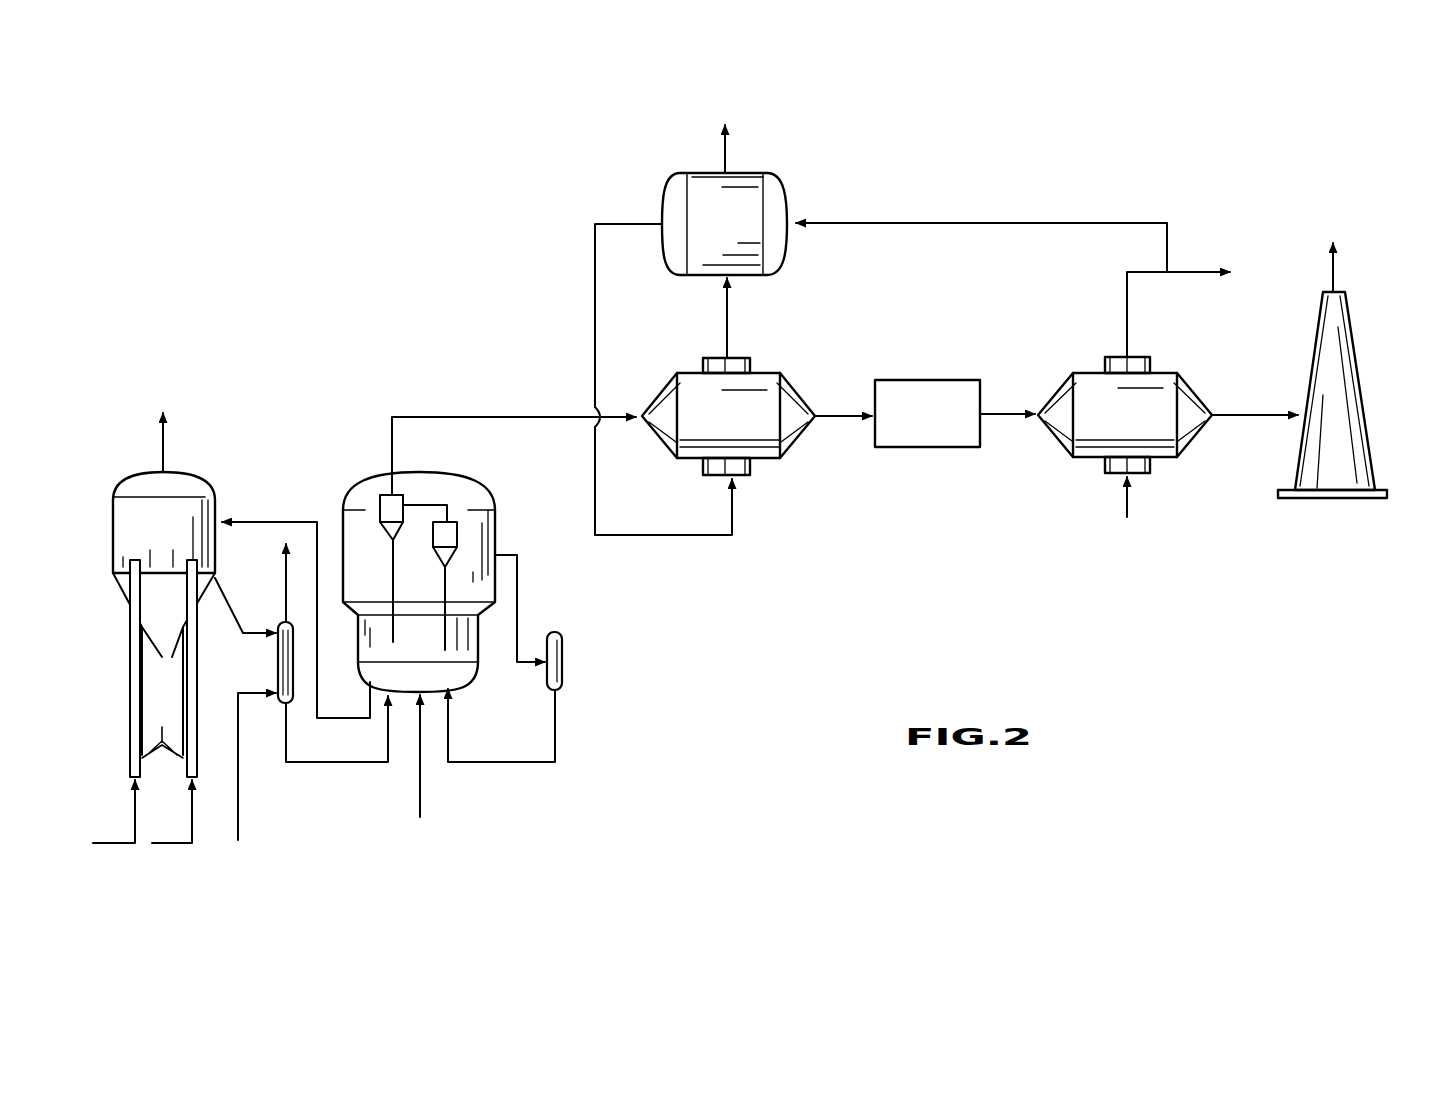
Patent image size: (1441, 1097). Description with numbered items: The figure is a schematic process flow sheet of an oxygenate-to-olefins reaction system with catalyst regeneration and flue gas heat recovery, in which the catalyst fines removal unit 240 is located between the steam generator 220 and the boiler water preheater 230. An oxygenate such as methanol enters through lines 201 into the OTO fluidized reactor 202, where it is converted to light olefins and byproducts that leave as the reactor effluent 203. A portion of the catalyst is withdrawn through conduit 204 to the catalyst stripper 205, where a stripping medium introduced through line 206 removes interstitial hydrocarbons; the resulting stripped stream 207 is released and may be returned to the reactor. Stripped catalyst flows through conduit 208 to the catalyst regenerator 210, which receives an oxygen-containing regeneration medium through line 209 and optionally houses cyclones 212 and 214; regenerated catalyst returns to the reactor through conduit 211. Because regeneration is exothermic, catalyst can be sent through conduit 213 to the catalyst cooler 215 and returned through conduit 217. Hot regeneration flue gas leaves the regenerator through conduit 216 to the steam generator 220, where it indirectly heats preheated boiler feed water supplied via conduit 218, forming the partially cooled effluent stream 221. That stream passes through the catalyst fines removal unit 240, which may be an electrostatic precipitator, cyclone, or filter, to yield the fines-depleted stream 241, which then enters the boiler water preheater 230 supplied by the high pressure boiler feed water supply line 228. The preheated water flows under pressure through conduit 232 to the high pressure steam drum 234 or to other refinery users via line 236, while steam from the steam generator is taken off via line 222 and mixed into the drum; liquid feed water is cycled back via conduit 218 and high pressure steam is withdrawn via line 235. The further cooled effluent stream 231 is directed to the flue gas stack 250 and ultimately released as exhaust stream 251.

The lines 201 is at (120, 845).
The OTO fluidized reactor 202 is at (180, 541).
The reactor effluent 203 is at (163, 455).
The conduit 204 is at (245, 606).
The catalyst stripper 205 is at (276, 660).
The line 206 is at (238, 820).
The stripped stream 207 is at (283, 585).
The conduit 208 is at (355, 765).
The line 209 is at (420, 790).
The catalyst regenerator 210 is at (498, 530).
The conduit 211 is at (313, 522).
The cyclone 212 is at (385, 536).
The conduit 213 is at (520, 600).
The cyclone 214 is at (433, 546).
The catalyst cooler 215 is at (563, 665).
The conduit 216 is at (446, 416).
The conduit 217 is at (515, 762).
The conduit 218 is at (595, 312).
The steam generator 220 is at (743, 431).
The partially cooled effluent stream 221 is at (840, 420).
The line 222 is at (722, 306).
The high pressure boiler feed water supply line 228 is at (1127, 517).
The boiler water preheater 230 is at (1136, 430).
The further cooled effluent stream 231 is at (1250, 420).
The conduit 232 is at (1127, 322).
The high pressure steam drum 234 is at (743, 236).
The line 235 is at (725, 150).
The line 236 is at (1218, 270).
The catalyst fines removal unit 240 is at (947, 430).
The fines-depleted stream 241 is at (1008, 410).
The flue gas stack 250 is at (1365, 400).
The exhaust stream 251 is at (1333, 270).